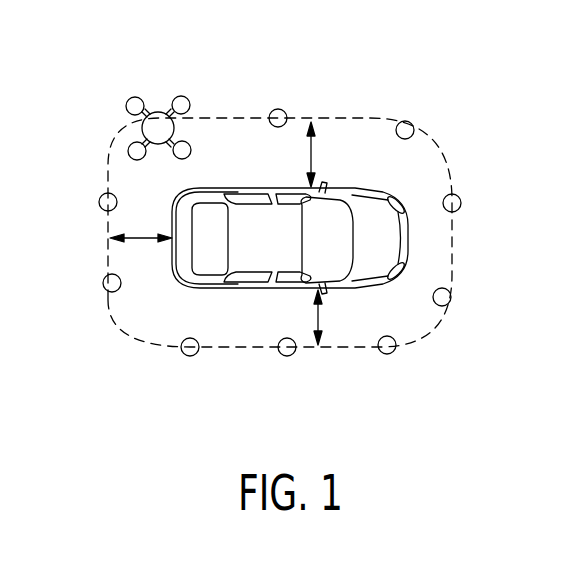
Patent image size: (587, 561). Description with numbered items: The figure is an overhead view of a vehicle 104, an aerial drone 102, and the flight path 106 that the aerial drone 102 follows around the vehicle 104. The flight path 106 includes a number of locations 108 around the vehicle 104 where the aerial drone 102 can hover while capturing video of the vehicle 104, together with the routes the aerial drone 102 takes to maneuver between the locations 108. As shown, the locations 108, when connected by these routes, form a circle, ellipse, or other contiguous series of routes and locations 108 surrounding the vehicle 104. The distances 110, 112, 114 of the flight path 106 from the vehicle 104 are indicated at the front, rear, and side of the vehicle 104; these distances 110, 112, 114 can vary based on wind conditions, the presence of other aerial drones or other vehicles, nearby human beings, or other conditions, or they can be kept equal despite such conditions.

The aerial drone 102 is at (133, 97).
The vehicle 104 is at (408, 238).
The flight path 106 is at (432, 148).
The locations 108 is at (276, 109).
The distance 110 is at (313, 157).
The distance 112 is at (323, 317).
The distance 114 is at (136, 238).